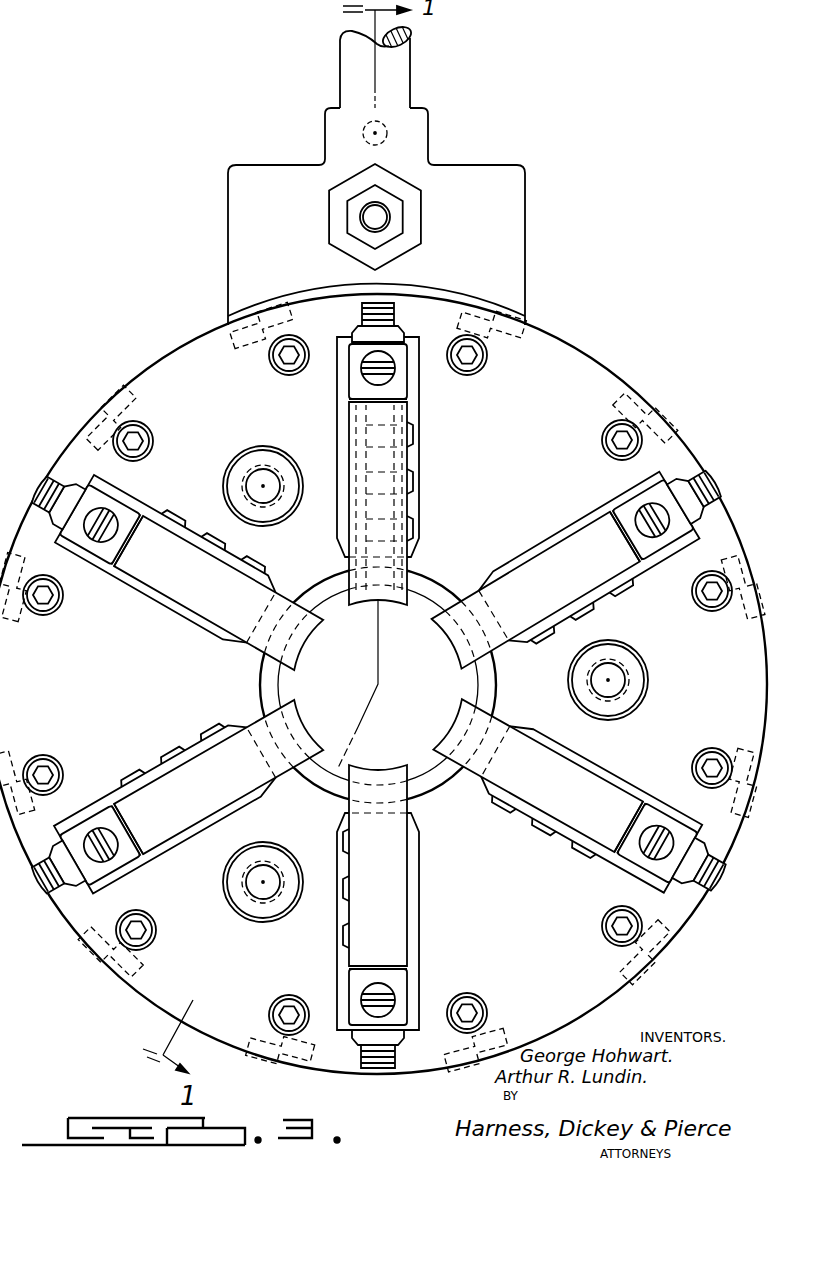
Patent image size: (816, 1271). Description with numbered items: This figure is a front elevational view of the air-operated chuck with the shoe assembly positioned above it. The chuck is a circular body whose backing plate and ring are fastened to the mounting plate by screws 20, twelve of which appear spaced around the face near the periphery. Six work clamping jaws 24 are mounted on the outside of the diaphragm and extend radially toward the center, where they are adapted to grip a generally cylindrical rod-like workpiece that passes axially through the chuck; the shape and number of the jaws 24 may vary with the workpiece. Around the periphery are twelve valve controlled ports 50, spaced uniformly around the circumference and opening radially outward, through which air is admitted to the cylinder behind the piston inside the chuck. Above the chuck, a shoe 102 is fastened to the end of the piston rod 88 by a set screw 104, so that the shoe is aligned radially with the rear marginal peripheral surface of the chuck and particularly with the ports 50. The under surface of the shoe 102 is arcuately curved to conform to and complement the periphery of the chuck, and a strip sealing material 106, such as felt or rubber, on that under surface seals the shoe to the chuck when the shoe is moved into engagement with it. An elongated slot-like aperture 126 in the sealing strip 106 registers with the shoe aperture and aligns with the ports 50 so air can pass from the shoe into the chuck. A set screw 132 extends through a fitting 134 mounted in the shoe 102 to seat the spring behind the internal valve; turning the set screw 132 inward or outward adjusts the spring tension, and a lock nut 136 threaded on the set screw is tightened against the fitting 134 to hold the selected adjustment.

The screws 20 is at (277, 364).
The work clamping jaws 24 is at (152, 510).
The valve controlled ports 50 is at (260, 340).
The piston rod 88 is at (398, 66).
The shoe 102 is at (520, 212).
The set screw 104 is at (389, 134).
The strip sealing material 106 is at (506, 311).
The slot-like aperture 126 is at (479, 306).
The set screw 132 is at (384, 214).
The fitting 134 is at (417, 235).
The lock nut 136 is at (398, 221).